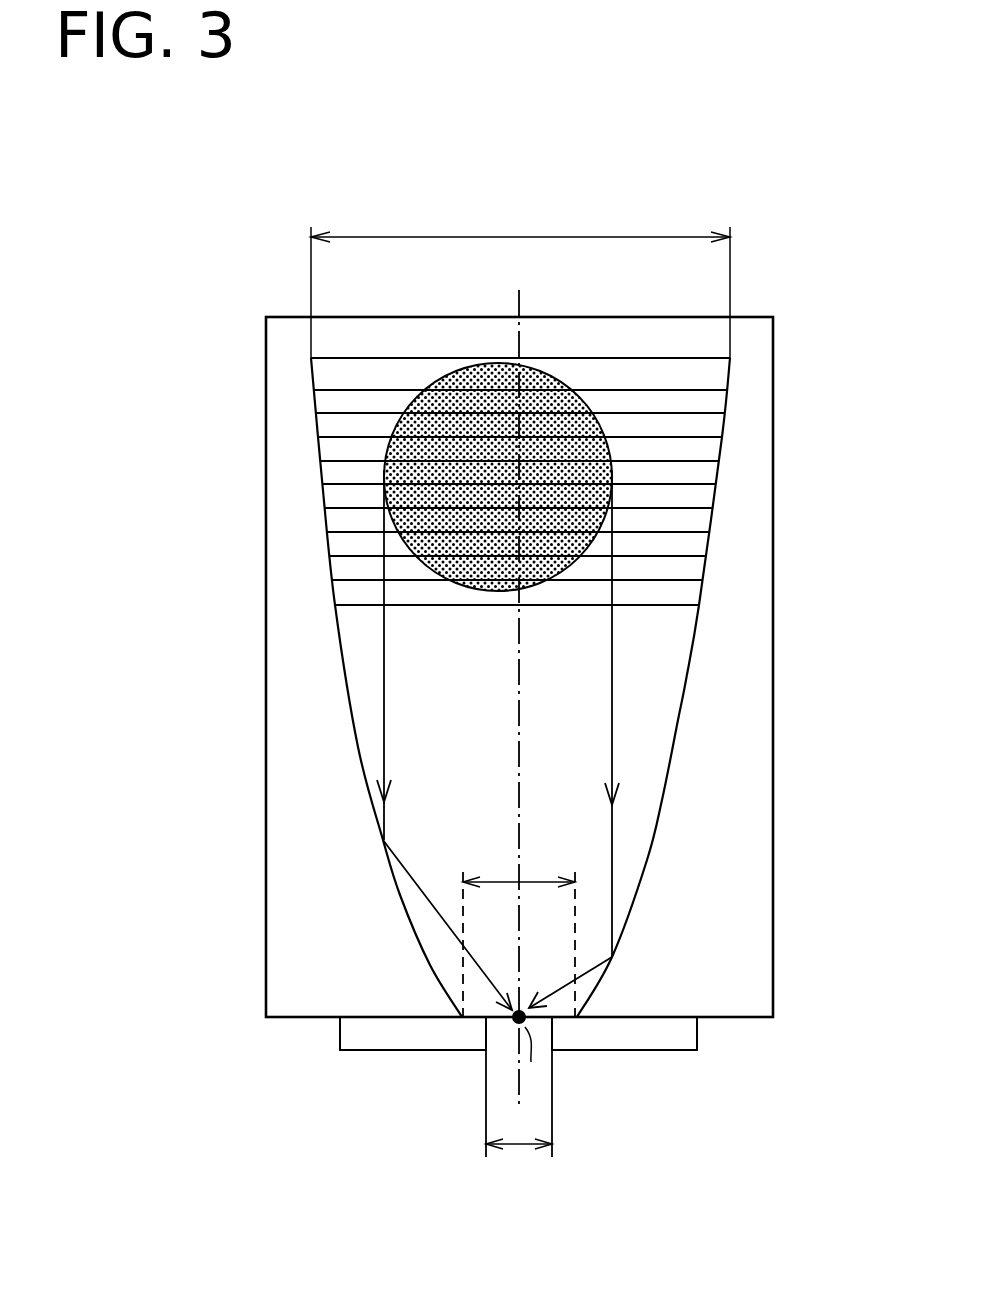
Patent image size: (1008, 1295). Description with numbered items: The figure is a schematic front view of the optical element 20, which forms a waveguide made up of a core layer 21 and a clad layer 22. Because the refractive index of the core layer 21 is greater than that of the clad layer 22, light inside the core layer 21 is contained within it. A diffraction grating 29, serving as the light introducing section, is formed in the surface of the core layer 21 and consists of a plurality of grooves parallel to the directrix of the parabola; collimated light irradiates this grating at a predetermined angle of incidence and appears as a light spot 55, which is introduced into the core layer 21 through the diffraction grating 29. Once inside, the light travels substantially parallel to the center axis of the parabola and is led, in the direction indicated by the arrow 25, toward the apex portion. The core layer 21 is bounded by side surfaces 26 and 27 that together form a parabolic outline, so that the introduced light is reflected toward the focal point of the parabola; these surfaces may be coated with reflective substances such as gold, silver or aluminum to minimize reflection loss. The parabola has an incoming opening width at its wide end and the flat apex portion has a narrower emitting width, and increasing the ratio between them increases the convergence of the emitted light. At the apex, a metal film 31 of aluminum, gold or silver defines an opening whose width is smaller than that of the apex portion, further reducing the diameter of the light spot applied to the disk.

The optical element 20 is at (238, 290).
The core layer 21 is at (675, 632).
The clad layer 22 is at (738, 487).
The arrow 25 is at (612, 870).
The side surface 26 is at (663, 798).
The side surface 27 is at (358, 748).
The diffraction grating 29 is at (684, 390).
The metal film 31 is at (395, 1040).
The light spot 55 is at (468, 415).